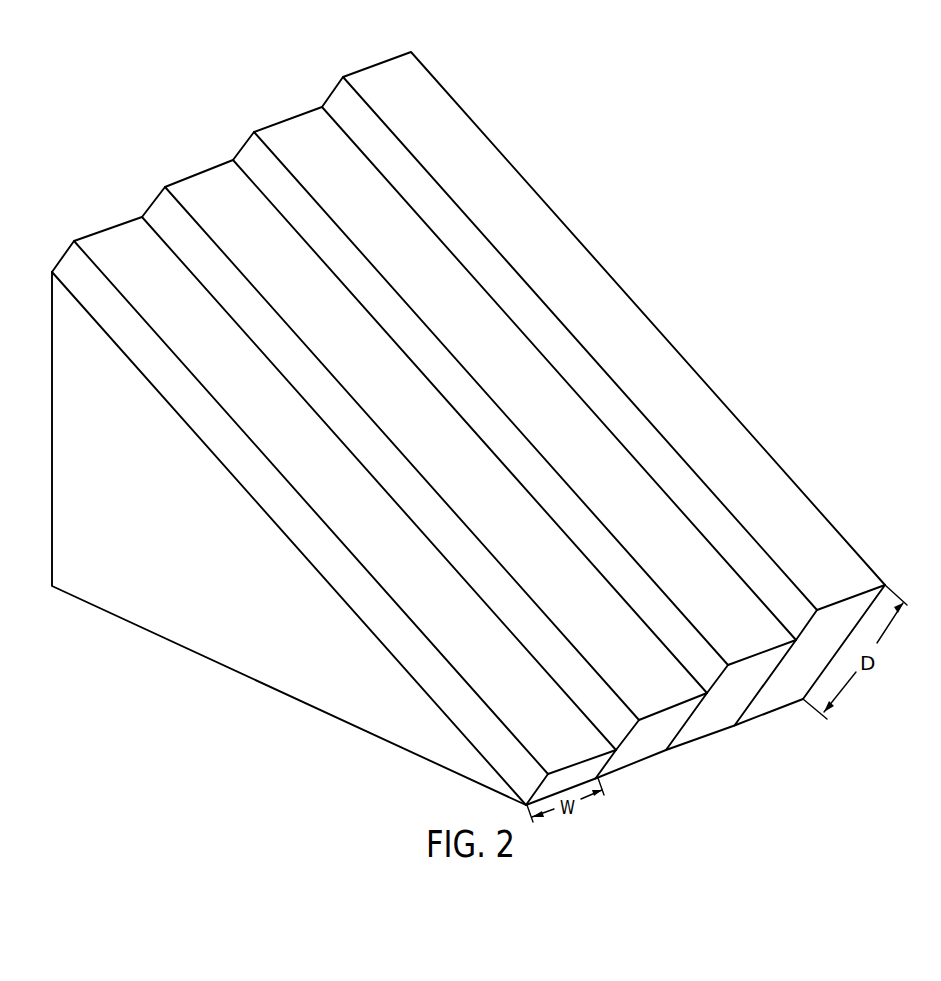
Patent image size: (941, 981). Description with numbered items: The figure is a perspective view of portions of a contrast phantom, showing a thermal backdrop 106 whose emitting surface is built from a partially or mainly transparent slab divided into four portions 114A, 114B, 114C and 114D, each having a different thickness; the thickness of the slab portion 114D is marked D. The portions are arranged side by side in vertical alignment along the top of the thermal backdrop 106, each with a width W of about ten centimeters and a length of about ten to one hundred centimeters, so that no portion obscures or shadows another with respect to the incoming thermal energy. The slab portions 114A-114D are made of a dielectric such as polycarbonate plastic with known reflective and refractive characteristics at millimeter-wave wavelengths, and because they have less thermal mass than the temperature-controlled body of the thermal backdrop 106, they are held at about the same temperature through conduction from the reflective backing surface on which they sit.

The thermal backdrop 106 is at (160, 638).
The slab portion 114A is at (114, 237).
The slab portion 114B is at (200, 183).
The slab portion 114C is at (290, 129).
The slab portion 114D is at (373, 78).